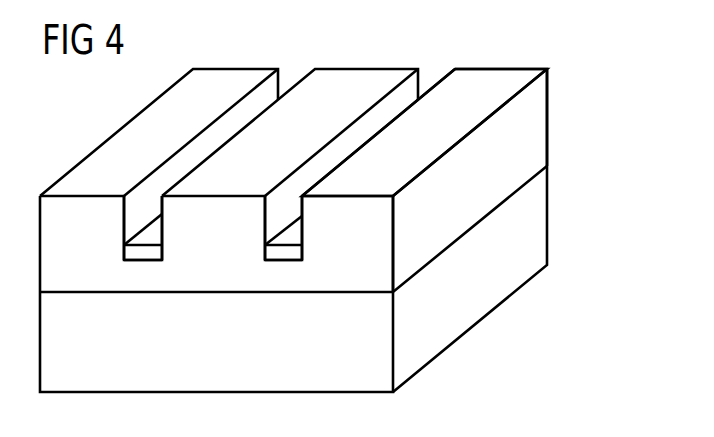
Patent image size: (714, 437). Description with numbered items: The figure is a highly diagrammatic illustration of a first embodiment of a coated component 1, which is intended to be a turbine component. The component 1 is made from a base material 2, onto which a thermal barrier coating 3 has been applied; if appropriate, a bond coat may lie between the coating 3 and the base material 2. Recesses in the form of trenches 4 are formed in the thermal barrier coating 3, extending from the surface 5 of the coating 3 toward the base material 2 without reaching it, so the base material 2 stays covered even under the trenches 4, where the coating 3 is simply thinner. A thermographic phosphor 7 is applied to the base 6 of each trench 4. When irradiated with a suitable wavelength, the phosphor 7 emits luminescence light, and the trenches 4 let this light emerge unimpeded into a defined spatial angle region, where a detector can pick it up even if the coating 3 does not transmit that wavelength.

The component 1 is at (575, 90).
The base material 2 is at (537, 230).
The thermal barrier coating 3 is at (537, 127).
The trenches 4 is at (182, 172).
The surface 5 is at (485, 83).
The base 6 is at (133, 258).
The thermographic phosphor 7 is at (153, 252).